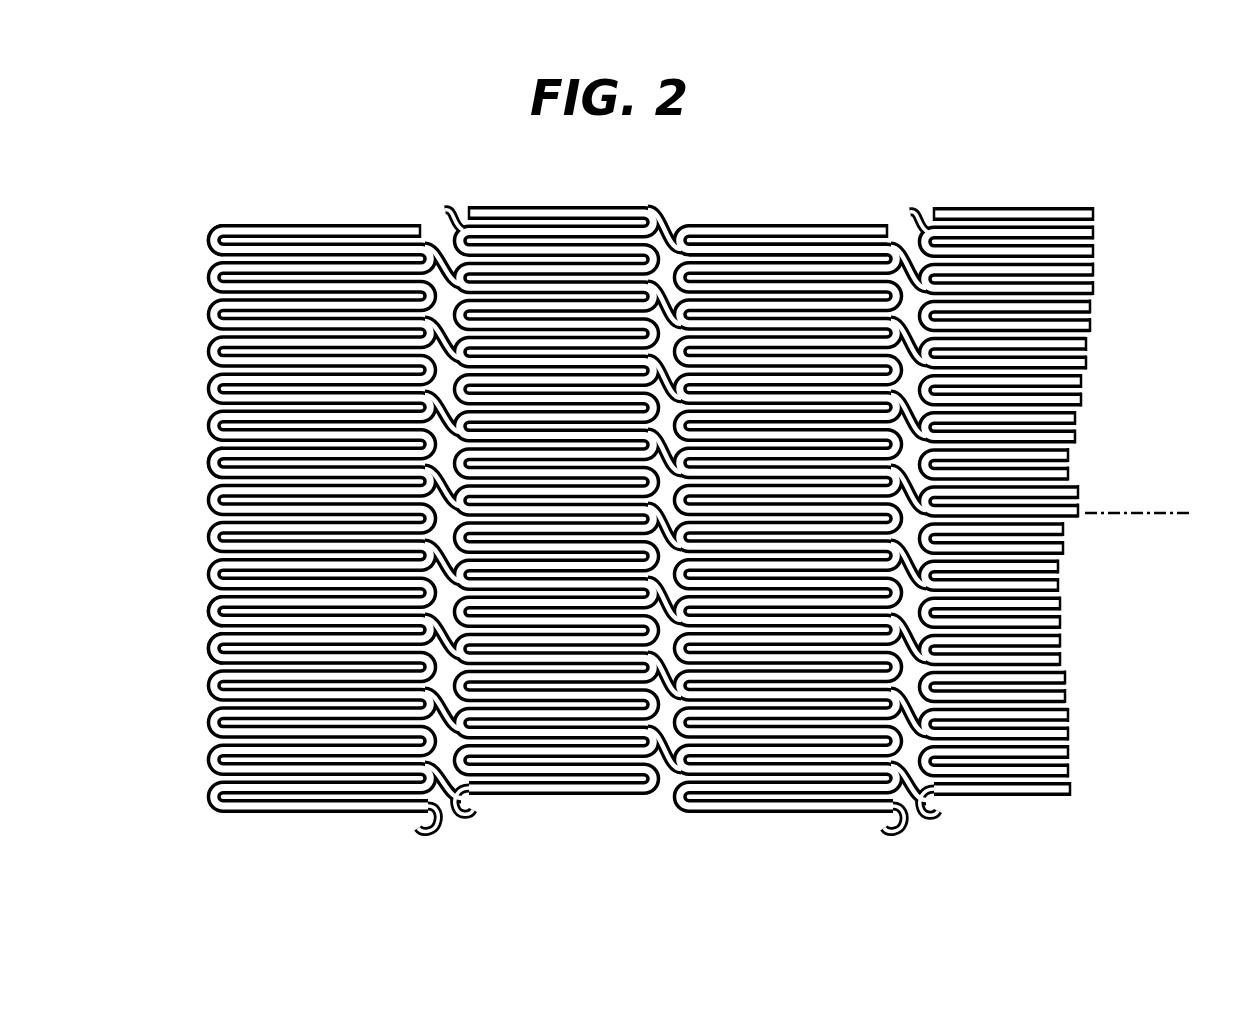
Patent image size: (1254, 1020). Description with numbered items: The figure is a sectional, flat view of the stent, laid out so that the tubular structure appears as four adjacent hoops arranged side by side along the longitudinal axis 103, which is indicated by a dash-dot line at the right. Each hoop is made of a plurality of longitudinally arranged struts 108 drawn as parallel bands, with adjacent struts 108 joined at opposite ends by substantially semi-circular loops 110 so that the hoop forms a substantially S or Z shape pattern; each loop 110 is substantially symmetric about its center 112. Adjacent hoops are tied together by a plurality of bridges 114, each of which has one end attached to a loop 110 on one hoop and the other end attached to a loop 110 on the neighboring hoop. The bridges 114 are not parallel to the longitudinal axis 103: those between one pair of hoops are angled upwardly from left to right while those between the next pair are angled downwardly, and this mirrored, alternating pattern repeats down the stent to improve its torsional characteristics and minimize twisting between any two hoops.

The longitudinal axis 103 is at (1165, 513).
The struts 108 is at (762, 257).
The loops 110 is at (207, 646).
The centers 112 is at (214, 236).
The bridges 114 is at (912, 290).